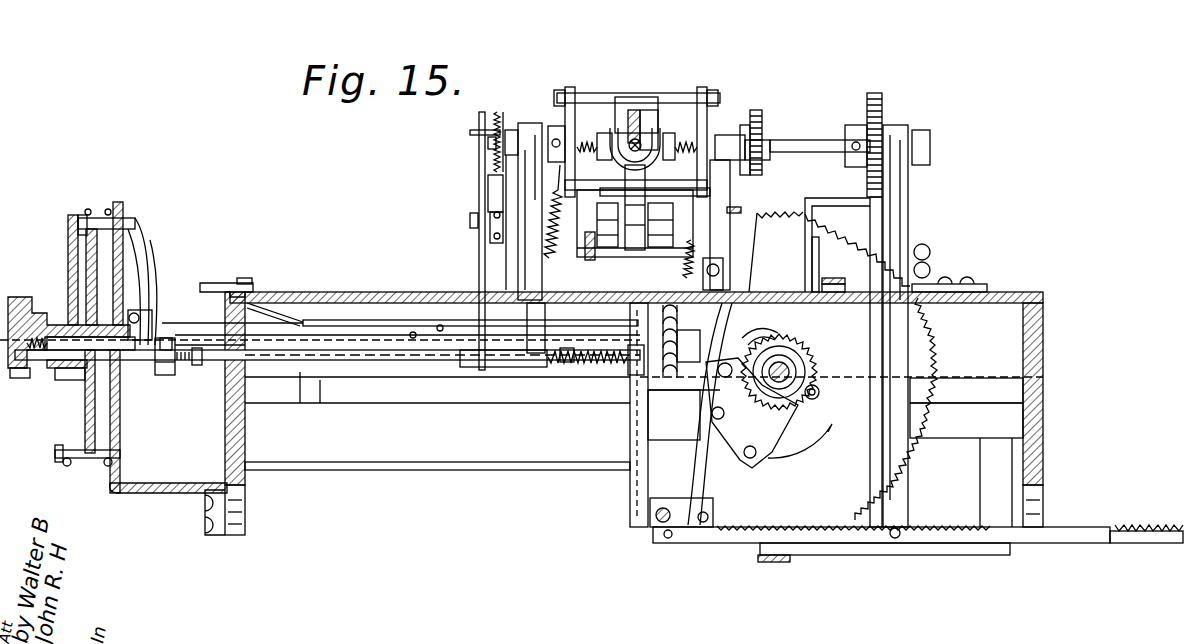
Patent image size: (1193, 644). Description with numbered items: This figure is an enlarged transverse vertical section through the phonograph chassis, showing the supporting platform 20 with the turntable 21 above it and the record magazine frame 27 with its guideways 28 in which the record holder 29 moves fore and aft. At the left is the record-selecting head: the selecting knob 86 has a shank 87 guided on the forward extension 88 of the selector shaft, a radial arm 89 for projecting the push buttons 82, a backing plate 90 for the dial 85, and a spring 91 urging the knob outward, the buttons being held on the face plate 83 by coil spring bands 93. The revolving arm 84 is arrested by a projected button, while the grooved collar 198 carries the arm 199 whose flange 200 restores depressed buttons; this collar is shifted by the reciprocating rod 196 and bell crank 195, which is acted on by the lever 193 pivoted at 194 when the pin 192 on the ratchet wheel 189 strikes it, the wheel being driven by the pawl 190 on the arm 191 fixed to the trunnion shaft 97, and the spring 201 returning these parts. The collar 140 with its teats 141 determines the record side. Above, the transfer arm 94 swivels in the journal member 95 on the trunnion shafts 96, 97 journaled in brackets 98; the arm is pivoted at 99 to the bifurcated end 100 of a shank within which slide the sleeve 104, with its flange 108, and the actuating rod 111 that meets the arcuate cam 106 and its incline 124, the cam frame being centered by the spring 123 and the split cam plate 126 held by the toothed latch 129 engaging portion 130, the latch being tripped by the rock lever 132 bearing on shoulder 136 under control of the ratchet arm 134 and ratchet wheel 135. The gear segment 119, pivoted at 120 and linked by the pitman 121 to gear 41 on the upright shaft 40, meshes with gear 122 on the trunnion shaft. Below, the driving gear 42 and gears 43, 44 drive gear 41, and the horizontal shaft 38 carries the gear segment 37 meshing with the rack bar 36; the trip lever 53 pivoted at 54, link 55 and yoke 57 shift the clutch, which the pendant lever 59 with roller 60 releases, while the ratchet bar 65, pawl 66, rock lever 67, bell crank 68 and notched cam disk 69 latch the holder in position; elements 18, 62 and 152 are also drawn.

The shaft 18 is at (310, 365).
The supporting platform 20 is at (521, 321).
The turntable 21 is at (215, 512).
The supporting frame 27 is at (247, 513).
The guideways or tracks 28 is at (970, 388).
The record holder 29 is at (966, 465).
The rack bar 36 is at (1156, 543).
The gear segment 37 is at (936, 340).
The horizontal shaft 38 is at (779, 384).
The upright shaft 40 is at (817, 358).
The gear 41 is at (722, 392).
The clutch-controlled driving gear 42 is at (700, 372).
The gear 43 is at (185, 334).
The gear 44 is at (645, 418).
The trip or actuating lever 53 is at (207, 283).
The pivot 54 is at (250, 280).
The link 55 is at (350, 320).
The yoke 57 is at (752, 340).
The pendant lever 59 is at (820, 276).
The roller 60 is at (820, 390).
The base plate 62 is at (790, 562).
The ratchet bar 65 is at (737, 543).
The pawl 66 is at (663, 545).
The rock lever 67 is at (648, 524).
The bell crank lever 68 is at (774, 432).
The notched cam disk 69 is at (793, 388).
The push buttons 82 is at (92, 460).
The face plate 83 is at (121, 202).
The revolving arm 84 is at (142, 248).
The dial 85 is at (86, 242).
The selecting knob 86 is at (22, 297).
The shank 87 is at (55, 370).
The forward extension 88 is at (88, 368).
The radial arm 89 is at (72, 215).
The backing plate 90 is at (96, 422).
The spring 91 is at (25, 380).
The coil spring bands 93 is at (90, 209).
The transfer arm 94 is at (636, 120).
The journal member 95 is at (628, 160).
The trunnion shaft 96 is at (798, 140).
The trunnion shaft 97 is at (538, 123).
The brackets 98 is at (527, 188).
The pivot 99 is at (615, 97).
The bifurcated end 100 is at (656, 105).
The sleeve 104 is at (573, 87).
The arcuate cam member 106 is at (647, 178).
The annular flange or head 108 is at (637, 183).
The actuating rod 111 is at (629, 141).
The gear segment 119 is at (876, 232).
The pivot 120 is at (855, 528).
The pitman or connecting rod 121 is at (912, 282).
The gear 122 is at (882, 95).
The spring 123 is at (556, 258).
The incline 124 is at (668, 258).
The cam plate 126 is at (612, 205).
The toothed latch 129 is at (720, 236).
The portion 130 is at (723, 264).
The rock lever 132 is at (726, 135).
The ratchet arm 134 is at (766, 148).
The ratchet wheel 135 is at (760, 130).
The shoulder 136 is at (752, 156).
The collar 140 is at (650, 375).
The teats or projections 141 is at (636, 395).
The pad 152 is at (742, 210).
The ratchet wheel 189 is at (478, 110).
The pawl 190 is at (490, 142).
The arm 191 is at (512, 130).
The pin 192 is at (470, 132).
The lever 193 is at (488, 178).
The pivot 194 is at (197, 368).
The bell crank 195 is at (492, 368).
The reciprocating rod 196 is at (413, 340).
The grooved collar 198 is at (160, 377).
The arm 199 is at (154, 276).
The flange 200 is at (137, 223).
The spring 201 is at (565, 372).